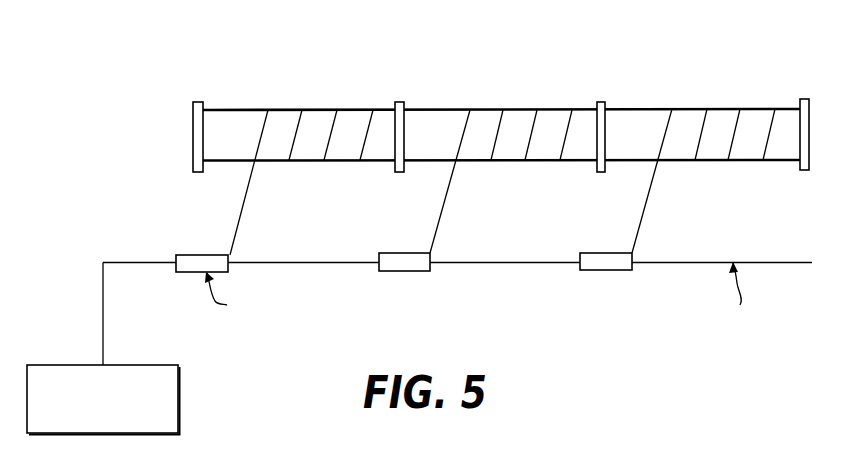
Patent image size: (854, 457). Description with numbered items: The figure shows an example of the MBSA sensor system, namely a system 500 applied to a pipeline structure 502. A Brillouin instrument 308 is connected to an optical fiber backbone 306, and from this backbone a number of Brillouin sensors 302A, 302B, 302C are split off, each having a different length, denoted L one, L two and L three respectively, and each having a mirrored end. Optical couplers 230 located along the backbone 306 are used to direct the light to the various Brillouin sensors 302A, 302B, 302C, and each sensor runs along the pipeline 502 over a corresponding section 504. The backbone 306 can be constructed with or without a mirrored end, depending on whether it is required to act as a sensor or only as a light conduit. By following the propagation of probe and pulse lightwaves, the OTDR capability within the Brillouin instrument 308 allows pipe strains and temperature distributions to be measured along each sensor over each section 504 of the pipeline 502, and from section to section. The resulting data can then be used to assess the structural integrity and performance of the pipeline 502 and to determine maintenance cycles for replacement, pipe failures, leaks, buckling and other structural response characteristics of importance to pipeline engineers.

The system 500 is at (68, 166).
The pipeline structure 502 is at (657, 77).
The section 504 is at (232, 110).
The Brillouin sensor 302A is at (298, 128).
The Brillouin sensor 302B is at (497, 126).
The Brillouin sensor 302C is at (735, 125).
The optical coupler 230 is at (188, 255).
The optical fiber backbone 306 is at (748, 262).
The Brillouin instrument 308 is at (42, 365).